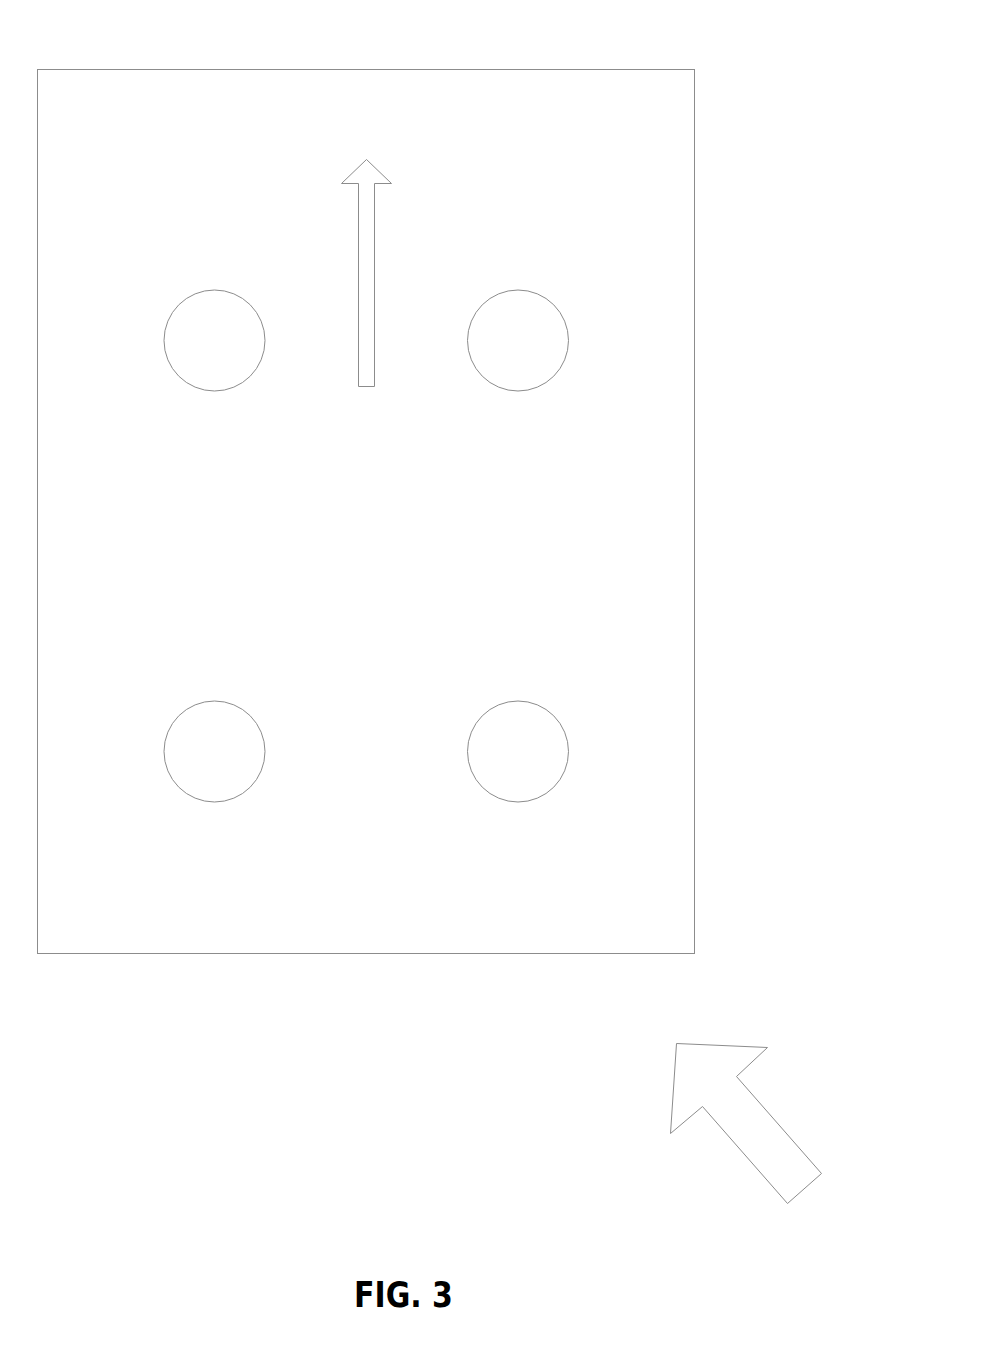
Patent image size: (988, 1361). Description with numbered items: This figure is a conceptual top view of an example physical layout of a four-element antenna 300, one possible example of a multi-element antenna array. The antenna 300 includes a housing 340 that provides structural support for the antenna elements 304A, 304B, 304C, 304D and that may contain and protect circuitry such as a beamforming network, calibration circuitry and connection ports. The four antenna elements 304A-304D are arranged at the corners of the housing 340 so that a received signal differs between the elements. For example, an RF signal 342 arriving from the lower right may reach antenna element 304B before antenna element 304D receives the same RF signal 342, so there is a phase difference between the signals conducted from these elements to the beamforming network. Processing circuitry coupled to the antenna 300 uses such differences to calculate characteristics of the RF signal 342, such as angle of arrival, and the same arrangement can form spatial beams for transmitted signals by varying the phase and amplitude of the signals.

The antenna 300 is at (649, 27).
The antenna element 304A is at (563, 340).
The antenna element 304B is at (563, 751).
The antenna element 304C is at (170, 751).
The antenna element 304D is at (170, 340).
The housing 340 is at (363, 960).
The RF signal 342 is at (700, 1204).